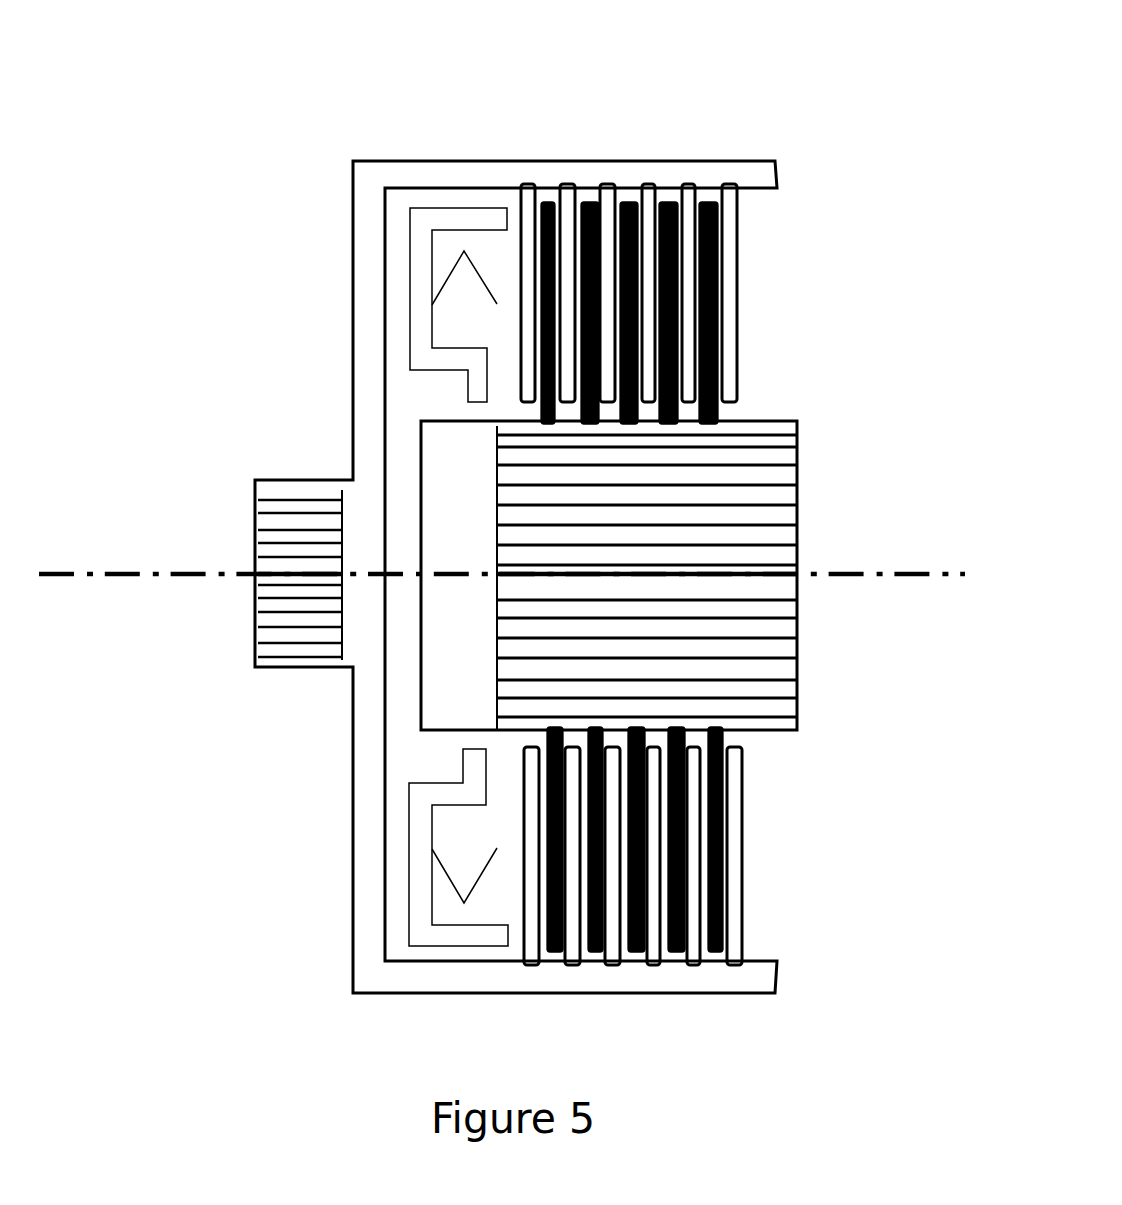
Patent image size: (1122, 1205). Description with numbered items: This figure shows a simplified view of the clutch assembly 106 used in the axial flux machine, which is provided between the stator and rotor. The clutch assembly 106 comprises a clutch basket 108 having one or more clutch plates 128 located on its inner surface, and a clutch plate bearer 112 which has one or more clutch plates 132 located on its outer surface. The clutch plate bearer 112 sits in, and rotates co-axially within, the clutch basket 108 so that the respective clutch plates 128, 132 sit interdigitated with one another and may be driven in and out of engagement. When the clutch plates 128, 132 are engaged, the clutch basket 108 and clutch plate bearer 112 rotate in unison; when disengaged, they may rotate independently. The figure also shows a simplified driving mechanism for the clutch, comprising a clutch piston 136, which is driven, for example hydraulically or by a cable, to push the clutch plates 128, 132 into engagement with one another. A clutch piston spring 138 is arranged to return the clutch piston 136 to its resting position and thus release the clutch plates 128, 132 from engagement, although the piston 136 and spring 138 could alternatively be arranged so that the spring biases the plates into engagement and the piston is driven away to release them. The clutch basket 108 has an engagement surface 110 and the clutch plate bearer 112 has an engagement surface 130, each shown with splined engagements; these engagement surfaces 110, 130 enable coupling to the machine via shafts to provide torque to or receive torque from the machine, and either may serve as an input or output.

The clutch assembly 106 is at (502, 510).
The clutch basket 108 is at (503, 170).
The engagement surface 110 is at (303, 532).
The clutch plate bearer 112 is at (672, 642).
The clutch plates 128 is at (730, 240).
The engagement surface 130 is at (746, 494).
The clutch plates 132 is at (727, 382).
The clutch piston 136 is at (422, 223).
The clutch piston spring 138 is at (447, 277).